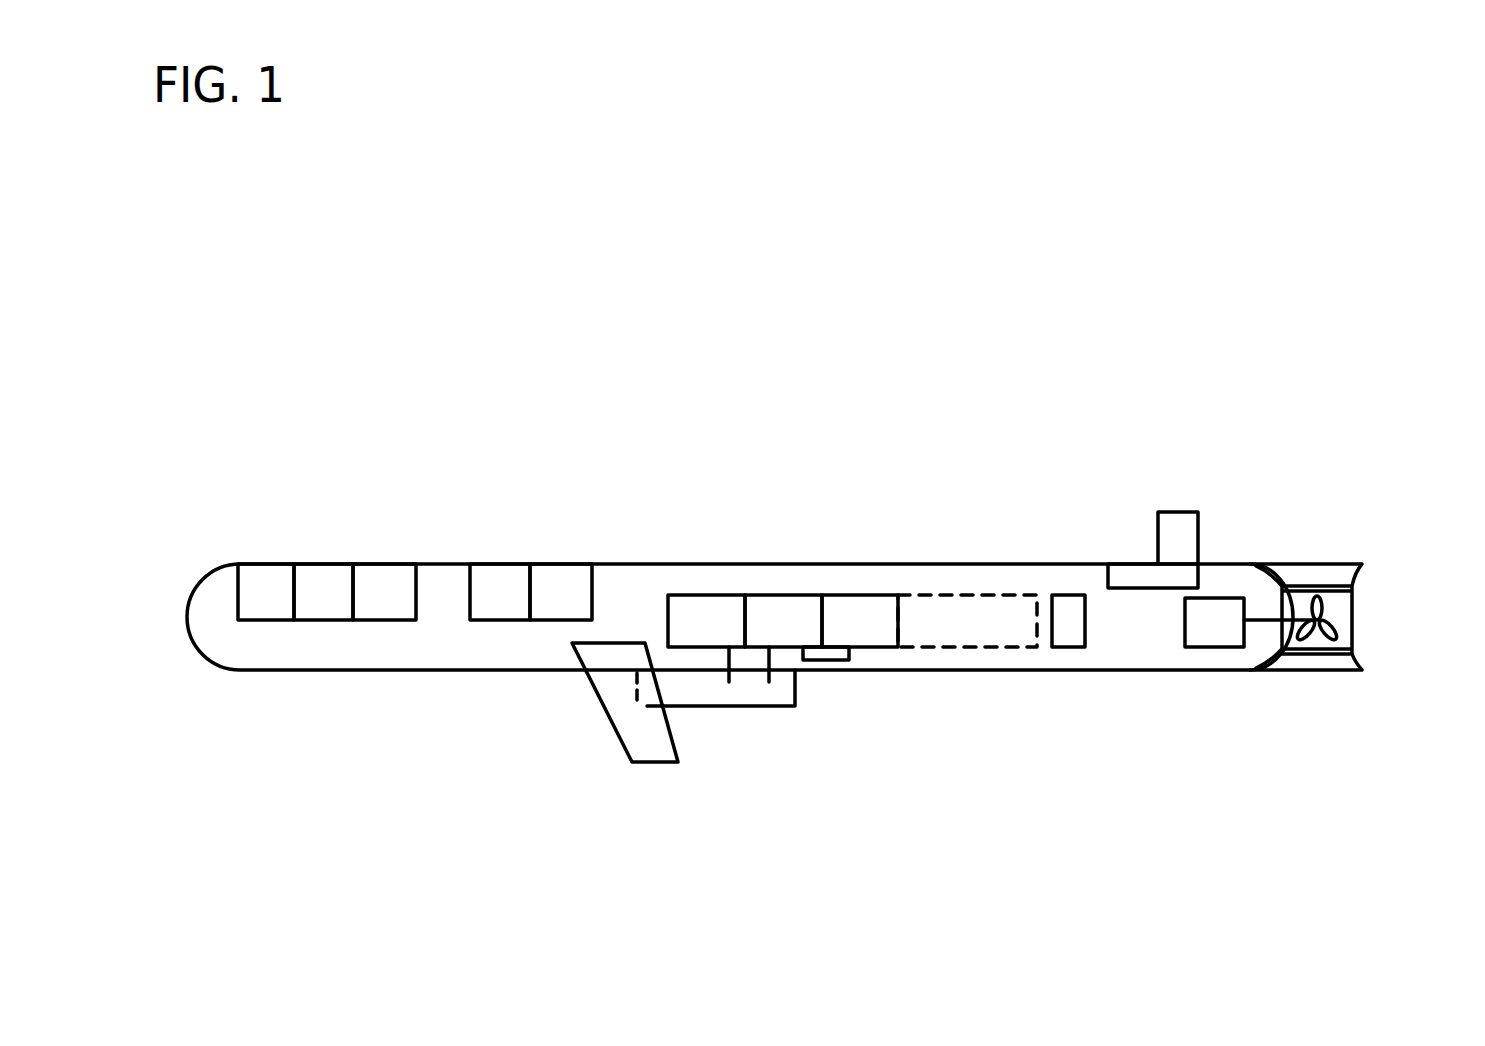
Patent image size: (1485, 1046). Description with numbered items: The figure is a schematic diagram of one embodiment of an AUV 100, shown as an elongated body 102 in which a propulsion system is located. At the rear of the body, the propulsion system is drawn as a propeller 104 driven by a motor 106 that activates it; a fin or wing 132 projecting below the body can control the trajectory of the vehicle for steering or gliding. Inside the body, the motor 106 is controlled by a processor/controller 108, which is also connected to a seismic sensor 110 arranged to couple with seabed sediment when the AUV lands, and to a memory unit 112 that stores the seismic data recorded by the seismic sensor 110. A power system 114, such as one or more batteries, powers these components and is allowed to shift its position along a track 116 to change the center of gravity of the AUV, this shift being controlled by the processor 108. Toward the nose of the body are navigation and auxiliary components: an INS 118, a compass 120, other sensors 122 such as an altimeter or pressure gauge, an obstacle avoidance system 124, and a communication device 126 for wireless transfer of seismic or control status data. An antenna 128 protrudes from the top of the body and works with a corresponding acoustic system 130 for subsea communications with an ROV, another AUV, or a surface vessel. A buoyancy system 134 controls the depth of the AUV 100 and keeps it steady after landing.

The AUV 100 is at (860, 370).
The body 102 is at (441, 630).
The propeller 104 is at (1332, 605).
The motor 106 is at (1208, 630).
The processor/controller 108 is at (783, 620).
The seismic sensor 110 is at (712, 706).
The memory unit 112 is at (703, 620).
The power system 114 is at (853, 618).
The track 116 is at (982, 617).
The INS 118 is at (567, 605).
The compass 120 is at (495, 605).
The other sensors 122 is at (388, 605).
The obstacle avoidance system 124 is at (323, 592).
The communication device 126 is at (262, 583).
The antenna 128 is at (1187, 530).
The acoustic system 130 is at (1140, 588).
The fins or wings 132 is at (632, 762).
The buoyancy system 134 is at (1072, 628).